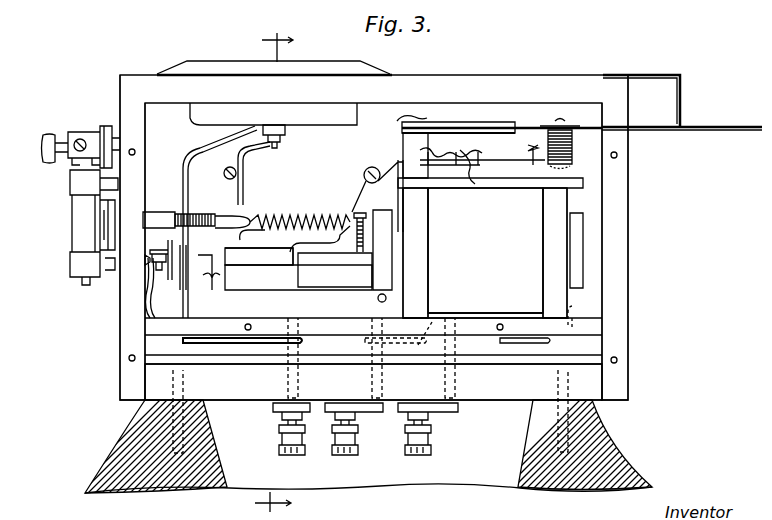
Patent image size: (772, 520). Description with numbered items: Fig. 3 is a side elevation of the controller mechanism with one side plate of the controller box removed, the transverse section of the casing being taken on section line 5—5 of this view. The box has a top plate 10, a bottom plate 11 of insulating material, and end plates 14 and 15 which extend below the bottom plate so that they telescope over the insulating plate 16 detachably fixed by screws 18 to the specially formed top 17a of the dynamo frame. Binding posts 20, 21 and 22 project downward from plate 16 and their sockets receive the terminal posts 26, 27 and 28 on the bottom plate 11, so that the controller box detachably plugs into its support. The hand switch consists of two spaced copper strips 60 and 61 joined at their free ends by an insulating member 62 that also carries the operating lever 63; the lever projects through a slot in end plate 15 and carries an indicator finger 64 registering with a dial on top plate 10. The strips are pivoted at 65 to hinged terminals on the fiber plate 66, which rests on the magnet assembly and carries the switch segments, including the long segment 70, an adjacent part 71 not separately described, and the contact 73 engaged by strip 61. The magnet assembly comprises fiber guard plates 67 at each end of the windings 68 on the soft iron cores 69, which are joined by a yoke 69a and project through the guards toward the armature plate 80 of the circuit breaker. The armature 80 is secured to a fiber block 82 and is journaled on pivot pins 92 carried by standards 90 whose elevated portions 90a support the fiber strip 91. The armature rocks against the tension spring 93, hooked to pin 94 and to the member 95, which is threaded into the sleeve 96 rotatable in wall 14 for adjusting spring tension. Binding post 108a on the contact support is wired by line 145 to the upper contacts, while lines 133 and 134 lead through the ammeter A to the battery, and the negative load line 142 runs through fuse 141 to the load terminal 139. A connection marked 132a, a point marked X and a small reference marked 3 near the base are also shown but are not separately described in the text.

The wire connection 3 is at (574, 312).
The section line 5— 5 is at (274, 269).
The top plate 10 is at (476, 80).
The bottom plate 11 is at (516, 322).
The end plate 14 is at (128, 114).
The end plate 15 is at (616, 215).
The insulating plate 16 is at (497, 398).
The specially formed top portion of the dynamo main frame 17a is at (135, 452).
The screws 18 is at (174, 422).
The binding post 20 is at (431, 433).
The binding post 21 is at (358, 433).
The binding post 22 is at (306, 437).
The terminal post 26 is at (458, 379).
The terminal post 27 is at (370, 379).
The terminal post 28 is at (286, 379).
The switch member 60 is at (525, 127).
The switch member 61 is at (530, 147).
The insulating member 62 is at (574, 148).
The operating handle or lever 63 is at (714, 126).
The indicator finger 64 is at (645, 74).
The pivot 65 is at (396, 120).
The fiber base plate 66 is at (506, 186).
The fiber guard plates 67 is at (420, 218).
The magnet coil 68 is at (485, 250).
The magnet cores 69 is at (398, 214).
The yoke 69a is at (578, 214).
The long segment 70 is at (484, 121).
The block 71 is at (415, 155).
The contact 73 is at (474, 186).
The circuit breaker armature 80 is at (380, 262).
The fiber block 82 is at (335, 270).
The supports or standards 90 is at (298, 278).
The elevated portion of support 90a is at (255, 266).
The fiber strip 91 is at (256, 250).
The pivot pins 92 is at (377, 299).
The tension spring 93 is at (300, 229).
The pin 94 is at (357, 254).
The adjustable member 95 is at (210, 228).
The sleeve 96 is at (159, 208).
The binding post 108a is at (178, 258).
The contacts 132a is at (443, 170).
The line 133 is at (190, 160).
The line 134 is at (246, 160).
The negative load line terminal 139 is at (80, 132).
The fuse 141 is at (72, 210).
The load line 142 is at (147, 300).
The line 145 is at (342, 233).
The ammeter A is at (218, 62).
The connection point X is at (440, 318).